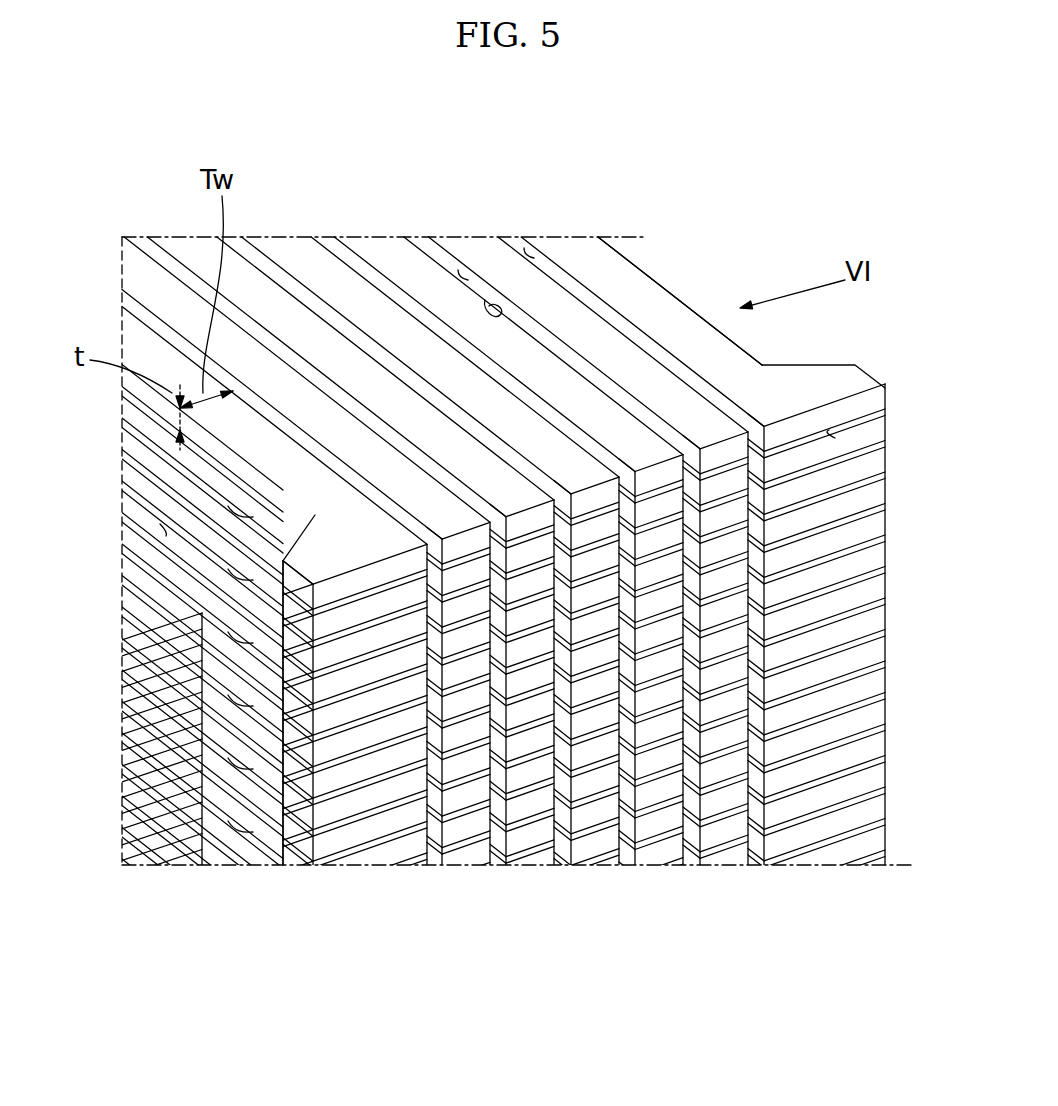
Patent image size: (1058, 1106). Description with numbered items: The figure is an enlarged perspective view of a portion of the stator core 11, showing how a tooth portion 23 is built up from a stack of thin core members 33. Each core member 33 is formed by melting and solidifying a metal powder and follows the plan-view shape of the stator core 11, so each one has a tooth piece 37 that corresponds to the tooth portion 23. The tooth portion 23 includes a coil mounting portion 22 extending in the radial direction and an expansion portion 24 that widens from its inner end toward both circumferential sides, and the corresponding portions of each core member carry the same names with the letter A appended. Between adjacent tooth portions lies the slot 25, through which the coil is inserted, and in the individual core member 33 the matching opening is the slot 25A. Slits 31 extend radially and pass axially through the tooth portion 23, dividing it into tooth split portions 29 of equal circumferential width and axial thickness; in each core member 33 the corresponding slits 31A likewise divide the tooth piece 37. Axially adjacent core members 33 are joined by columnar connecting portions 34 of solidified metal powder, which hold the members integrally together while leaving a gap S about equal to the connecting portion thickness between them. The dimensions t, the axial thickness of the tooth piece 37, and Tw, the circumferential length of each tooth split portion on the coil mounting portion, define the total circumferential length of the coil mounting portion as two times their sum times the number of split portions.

The stator core 11 is at (714, 178).
The coil mounting portion 22 is at (683, 302).
The tooth portion 23 is at (893, 622).
The expansion portion 24 is at (843, 377).
The slot 25 is at (163, 534).
The slot of core member 25A is at (200, 450).
The tooth split portion 29 is at (528, 625).
The slit 31 is at (540, 262).
The slit of core member 31A is at (565, 288).
The core member 33 is at (278, 609).
The connecting portion 34 is at (280, 580).
The tooth piece 37 is at (653, 270).
The gap S is at (822, 437).